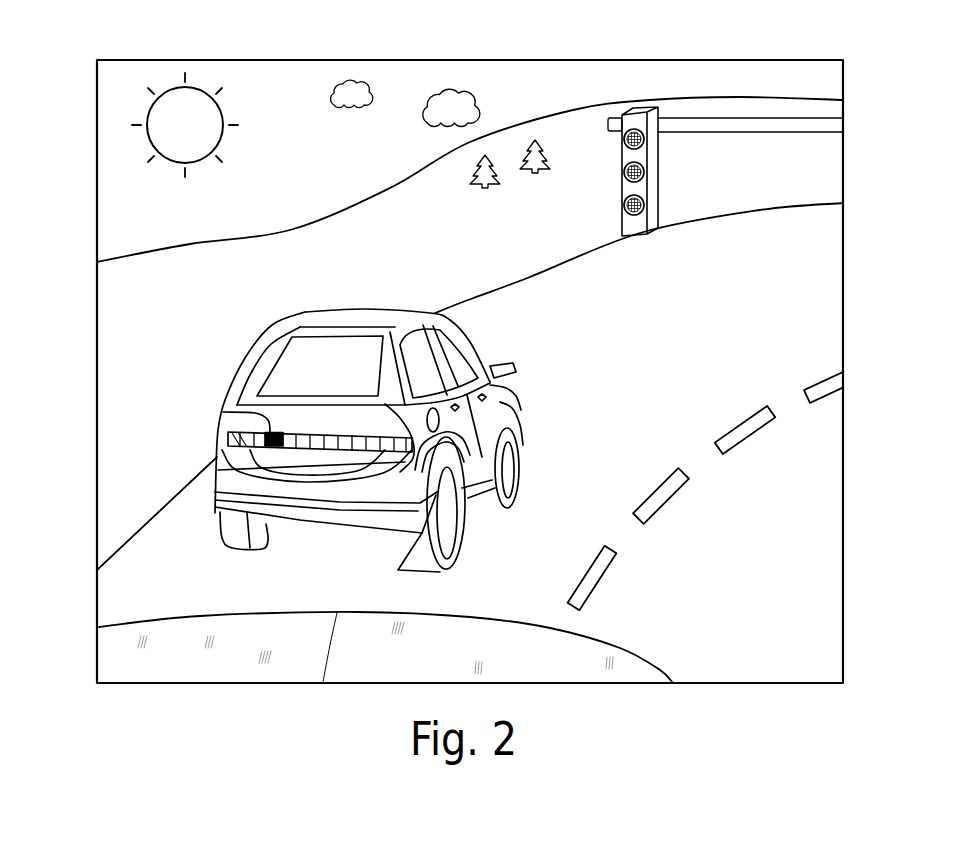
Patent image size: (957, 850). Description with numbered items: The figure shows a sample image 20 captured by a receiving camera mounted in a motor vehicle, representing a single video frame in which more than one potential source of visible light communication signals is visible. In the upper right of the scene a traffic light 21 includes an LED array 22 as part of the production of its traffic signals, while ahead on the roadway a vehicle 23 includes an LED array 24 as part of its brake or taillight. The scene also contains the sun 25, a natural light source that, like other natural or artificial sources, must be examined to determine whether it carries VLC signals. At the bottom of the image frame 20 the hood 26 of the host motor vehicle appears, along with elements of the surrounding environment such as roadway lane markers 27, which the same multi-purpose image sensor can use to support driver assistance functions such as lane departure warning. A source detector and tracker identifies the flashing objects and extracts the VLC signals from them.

The sample image 20 is at (97, 497).
The traffic light 21 is at (725, 126).
The LED array 22 is at (645, 149).
The vehicle 23 is at (342, 446).
The LED array 24 is at (223, 412).
The sun 25 is at (190, 103).
The hood 26 is at (227, 668).
The roadway lane markers 27 is at (663, 476).